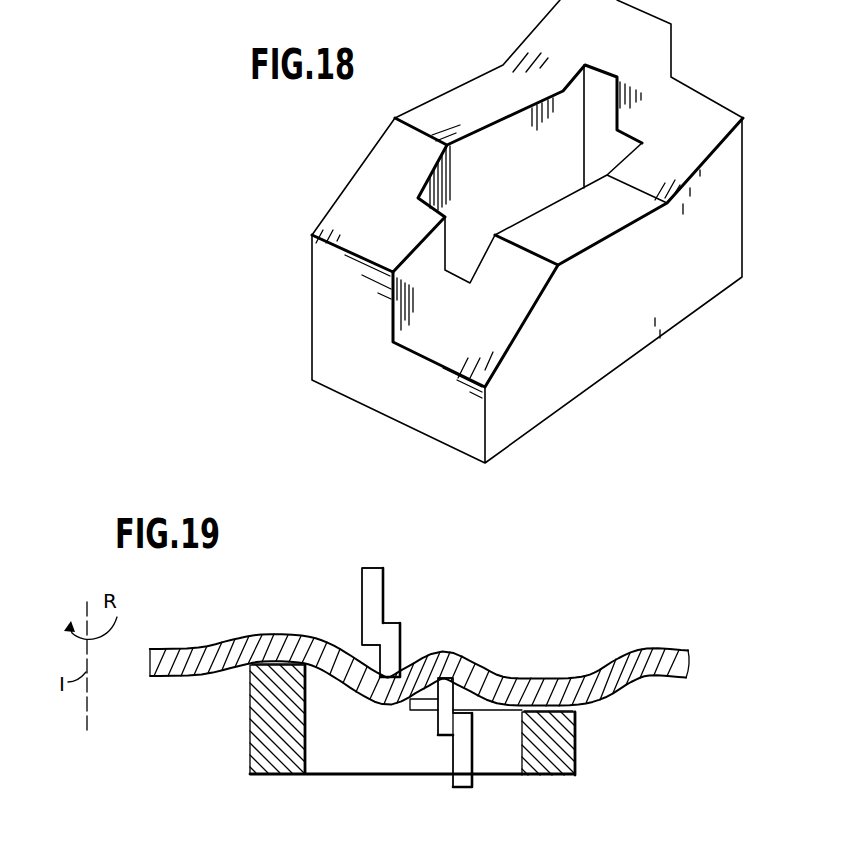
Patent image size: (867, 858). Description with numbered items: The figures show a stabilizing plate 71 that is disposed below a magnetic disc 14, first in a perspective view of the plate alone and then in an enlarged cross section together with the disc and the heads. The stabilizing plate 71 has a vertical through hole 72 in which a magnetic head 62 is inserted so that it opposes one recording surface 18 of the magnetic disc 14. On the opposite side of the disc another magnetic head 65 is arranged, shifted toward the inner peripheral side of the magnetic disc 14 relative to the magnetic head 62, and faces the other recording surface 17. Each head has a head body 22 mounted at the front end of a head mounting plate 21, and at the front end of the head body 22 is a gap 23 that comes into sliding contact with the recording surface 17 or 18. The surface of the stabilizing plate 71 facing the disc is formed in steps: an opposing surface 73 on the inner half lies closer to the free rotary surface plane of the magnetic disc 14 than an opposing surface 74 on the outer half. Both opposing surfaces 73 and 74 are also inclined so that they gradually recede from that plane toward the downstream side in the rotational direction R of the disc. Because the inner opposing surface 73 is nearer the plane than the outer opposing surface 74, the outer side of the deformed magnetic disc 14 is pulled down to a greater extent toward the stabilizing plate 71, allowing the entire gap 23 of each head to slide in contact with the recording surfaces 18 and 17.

In FIG. 19, the magnetic disc 14 is at (419, 672).
In FIG. 19, the recording surface 17 is at (183, 650).
In FIG. 19, the recording surface 18 is at (633, 685).
In FIG. 19, the head mounting plate 21 is at (364, 588).
In FIG. 19, the head body 22 is at (390, 637).
In FIG. 19, the gap 23 is at (443, 657).
In FIG. 19, the magnetic head 62 is at (460, 798).
In FIG. 19, the magnetic head 65 is at (392, 583).
In FIG. 18, the stabilizing plate 71 is at (669, 364).
In FIG. 19, the stabilizing plate 71 is at (412, 707).
In FIG. 18, the vertical through hole 72 is at (496, 166).
In FIG. 19, the vertical through hole 72 is at (334, 746).
In FIG. 18, the opposing surface 73 is at (553, 42).
In FIG. 19, the opposing surface 73 is at (283, 662).
In FIG. 18, the opposing surface 74 is at (698, 118).
In FIG. 19, the opposing surface 74 is at (550, 680).